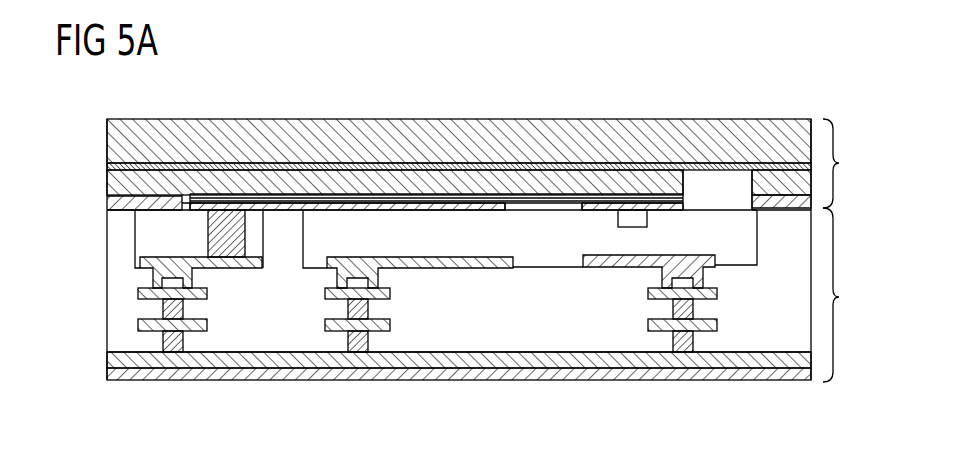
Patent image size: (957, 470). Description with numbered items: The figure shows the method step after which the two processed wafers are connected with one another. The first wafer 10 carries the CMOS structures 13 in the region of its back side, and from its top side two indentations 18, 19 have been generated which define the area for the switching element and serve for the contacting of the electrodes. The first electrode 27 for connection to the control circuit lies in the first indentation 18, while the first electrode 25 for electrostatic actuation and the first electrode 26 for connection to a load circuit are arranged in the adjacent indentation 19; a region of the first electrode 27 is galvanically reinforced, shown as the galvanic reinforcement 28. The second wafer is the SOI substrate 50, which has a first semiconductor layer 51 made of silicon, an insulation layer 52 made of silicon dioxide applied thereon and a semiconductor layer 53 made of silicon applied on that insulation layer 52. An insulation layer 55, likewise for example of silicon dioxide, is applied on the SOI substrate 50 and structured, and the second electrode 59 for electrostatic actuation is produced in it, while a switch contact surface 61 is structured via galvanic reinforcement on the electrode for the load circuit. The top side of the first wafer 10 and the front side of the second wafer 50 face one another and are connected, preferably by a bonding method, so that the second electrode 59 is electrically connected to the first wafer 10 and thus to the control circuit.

The first wafer 10 is at (461, 252).
The CMOS structures 13 is at (107, 362).
The first indentation 18 is at (140, 248).
The second indentation 19 is at (303, 240).
The first electrode for electrostatic actuation 25 is at (433, 257).
The first electrode for connection to a load circuit 26 is at (665, 255).
The first electrode for connection to the control circuit 27 is at (138, 263).
The galvanic reinforcement 28 is at (207, 220).
The SOI substrate 50 is at (456, 156).
The first semiconductor layer 51 is at (695, 120).
The insulation layer 52 is at (738, 166).
The semiconductor layer 53 is at (630, 180).
The insulation layer 55 is at (107, 205).
The second electrode for electrostatic actuation 59 is at (502, 210).
The switch contact surface 61 is at (618, 220).